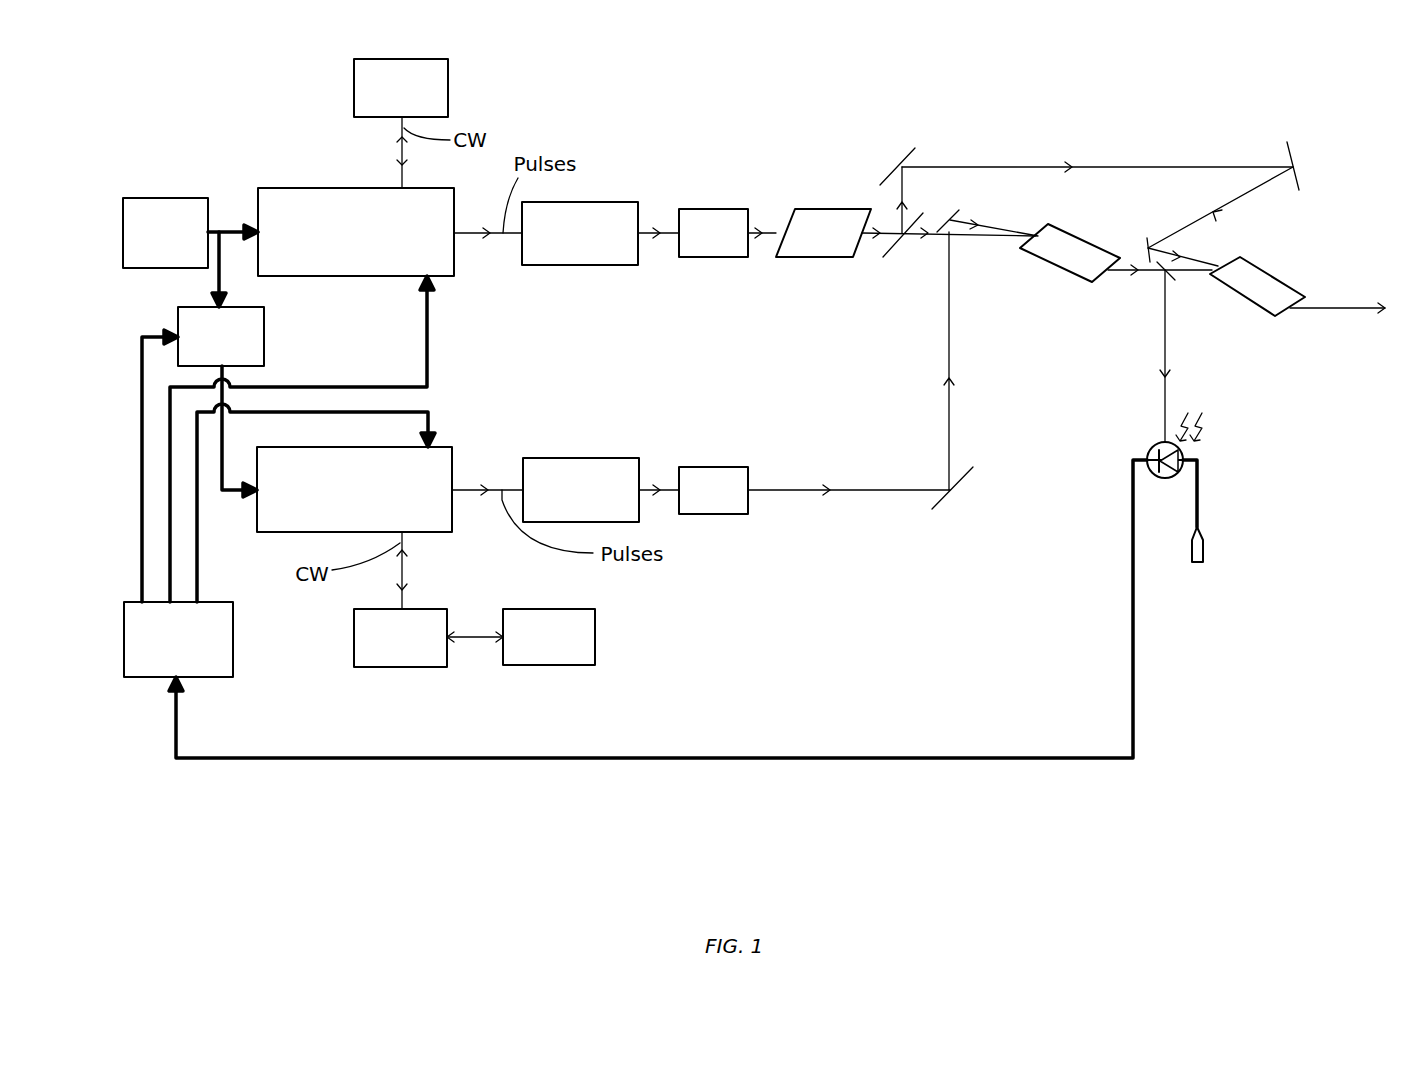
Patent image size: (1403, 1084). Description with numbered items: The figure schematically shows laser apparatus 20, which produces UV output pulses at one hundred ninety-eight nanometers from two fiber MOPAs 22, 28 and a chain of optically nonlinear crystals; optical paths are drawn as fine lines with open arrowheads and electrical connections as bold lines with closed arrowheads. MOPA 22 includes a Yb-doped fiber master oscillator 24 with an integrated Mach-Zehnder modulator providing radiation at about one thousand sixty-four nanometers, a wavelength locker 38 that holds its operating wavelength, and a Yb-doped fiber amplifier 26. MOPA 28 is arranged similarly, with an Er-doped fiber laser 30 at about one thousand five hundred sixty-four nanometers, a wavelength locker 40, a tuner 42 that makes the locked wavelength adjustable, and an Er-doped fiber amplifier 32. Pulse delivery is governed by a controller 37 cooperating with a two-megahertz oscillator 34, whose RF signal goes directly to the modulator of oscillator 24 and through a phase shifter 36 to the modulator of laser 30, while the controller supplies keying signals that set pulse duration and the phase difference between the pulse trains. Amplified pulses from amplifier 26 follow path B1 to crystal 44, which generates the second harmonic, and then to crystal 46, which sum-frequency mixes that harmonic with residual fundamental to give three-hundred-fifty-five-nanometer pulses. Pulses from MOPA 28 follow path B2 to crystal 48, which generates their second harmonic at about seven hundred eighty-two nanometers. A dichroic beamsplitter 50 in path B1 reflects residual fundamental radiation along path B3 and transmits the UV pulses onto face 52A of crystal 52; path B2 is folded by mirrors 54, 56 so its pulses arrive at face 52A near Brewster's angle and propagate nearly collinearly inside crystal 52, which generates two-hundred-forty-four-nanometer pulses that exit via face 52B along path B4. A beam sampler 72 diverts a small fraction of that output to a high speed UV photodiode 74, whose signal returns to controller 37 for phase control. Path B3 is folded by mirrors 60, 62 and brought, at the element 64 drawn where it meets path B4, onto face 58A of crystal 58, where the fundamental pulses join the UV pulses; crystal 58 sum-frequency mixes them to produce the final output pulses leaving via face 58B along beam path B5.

The laser apparatus 20 is at (926, 836).
The fiber laser MOPA 22 is at (532, 305).
The fiber master oscillator 24 is at (287, 193).
The fiber amplifier 26 is at (623, 205).
The fiber laser MOPA 28 is at (522, 410).
The fiber laser 30 is at (265, 525).
The fiber amplifier 32 is at (632, 513).
The 2-MHz oscillator 34 is at (145, 198).
The phase shifter 36 is at (258, 316).
The controller 37 is at (210, 670).
The wavelength locker 38 is at (437, 70).
The wavelength locker 40 is at (360, 655).
The tuner 42 is at (590, 645).
The optically nonlinear crystal 44 is at (735, 212).
The optically nonlinear crystal 46 is at (820, 212).
The optically nonlinear crystal 48 is at (735, 512).
The dichroic beamsplitter 50 is at (897, 250).
The optically nonlinear crystal 52 is at (1060, 272).
The face of crystal 52 52A is at (1040, 228).
The face of crystal 52 52B is at (1098, 277).
The mirror 54 is at (967, 482).
The mirror 56 is at (953, 208).
The optically nonlinear crystal 58 is at (1258, 318).
The face of crystal 58 58A is at (1240, 260).
The face of crystal 58 58B is at (1280, 320).
The mirror 60 is at (913, 150).
The mirror 62 is at (1287, 152).
The beam combiner 64 is at (1145, 243).
The beam sampler 72 is at (1175, 280).
The UV photodiode 74 is at (1165, 492).
The path B1 is at (655, 238).
The path B2 is at (950, 405).
The path B3 is at (1140, 165).
The path B4 is at (1123, 272).
The beam path B5 is at (1300, 310).